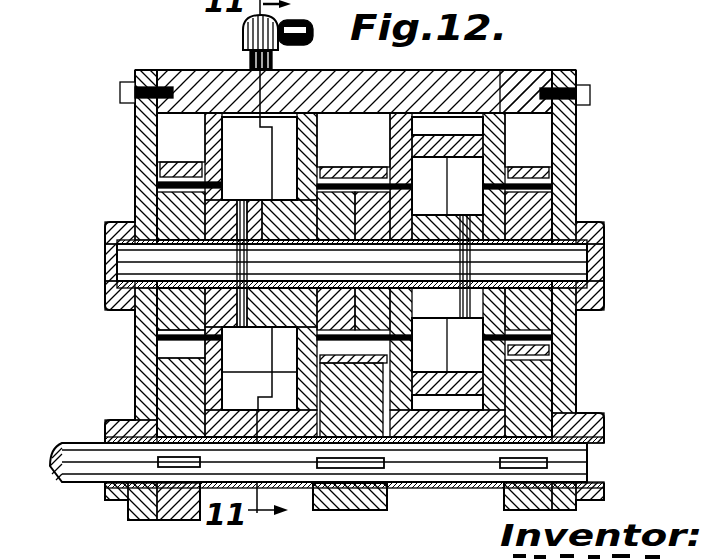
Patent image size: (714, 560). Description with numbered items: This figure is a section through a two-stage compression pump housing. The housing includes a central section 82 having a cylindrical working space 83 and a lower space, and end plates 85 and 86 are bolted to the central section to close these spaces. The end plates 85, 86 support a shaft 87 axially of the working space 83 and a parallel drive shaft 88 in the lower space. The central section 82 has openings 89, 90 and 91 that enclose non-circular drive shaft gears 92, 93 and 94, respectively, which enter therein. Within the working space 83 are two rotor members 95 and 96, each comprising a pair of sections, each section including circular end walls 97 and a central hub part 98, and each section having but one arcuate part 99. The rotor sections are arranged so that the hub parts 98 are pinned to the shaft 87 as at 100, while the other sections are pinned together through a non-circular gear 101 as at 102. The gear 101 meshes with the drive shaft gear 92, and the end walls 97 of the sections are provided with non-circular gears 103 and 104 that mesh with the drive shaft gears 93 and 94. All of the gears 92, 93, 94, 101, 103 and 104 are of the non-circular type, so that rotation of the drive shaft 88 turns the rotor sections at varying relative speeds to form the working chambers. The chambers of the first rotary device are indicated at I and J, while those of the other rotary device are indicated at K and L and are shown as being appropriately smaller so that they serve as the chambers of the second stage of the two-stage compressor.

The central section 82 is at (499, 82).
The cylindrical working space 83 is at (537, 135).
The end plate 85 is at (137, 160).
The end plate 86 is at (565, 183).
The shaft 87 is at (541, 260).
The drive shaft 88 is at (442, 462).
The opening 89 is at (307, 432).
The opening 90 is at (203, 425).
The opening 91 is at (497, 440).
The drive shaft gear 92 is at (360, 495).
The drive shaft gear 93 is at (178, 505).
The drive shaft gear 94 is at (533, 390).
The rotor member 95 is at (286, 126).
The rotor member 96 is at (456, 122).
The circular end wall 97 is at (228, 134).
The central hub part 98 is at (253, 200).
The arcuate part 99 is at (243, 147).
The pin 100 is at (240, 327).
The non-circular gear 101 is at (353, 166).
The pin 102 is at (410, 189).
The non-circular gear 103 is at (182, 154).
The non-circular gear 104 is at (532, 170).
The chamber I is at (253, 165).
The chamber J is at (243, 385).
The chamber K is at (524, 77).
The chamber L is at (462, 403).